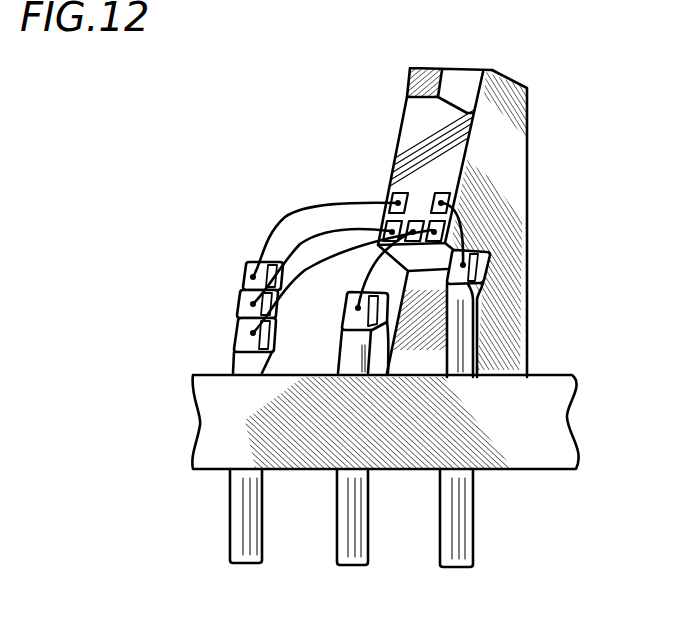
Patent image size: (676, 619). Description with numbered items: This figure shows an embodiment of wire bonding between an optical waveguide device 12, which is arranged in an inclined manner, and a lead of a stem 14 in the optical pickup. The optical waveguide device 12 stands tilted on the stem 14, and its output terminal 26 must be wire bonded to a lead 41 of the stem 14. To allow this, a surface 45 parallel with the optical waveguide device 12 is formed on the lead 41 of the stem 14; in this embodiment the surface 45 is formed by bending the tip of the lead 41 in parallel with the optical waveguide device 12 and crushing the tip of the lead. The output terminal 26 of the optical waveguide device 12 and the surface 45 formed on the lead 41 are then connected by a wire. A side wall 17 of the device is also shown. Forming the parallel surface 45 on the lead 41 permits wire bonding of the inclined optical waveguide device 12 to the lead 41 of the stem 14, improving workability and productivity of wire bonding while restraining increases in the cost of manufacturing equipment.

The optical waveguide device 12 is at (493, 148).
The stem 14 is at (543, 422).
The side wall 17 is at (537, 248).
The output terminal 26 is at (393, 190).
The lead 41 is at (460, 348).
The surface 45 is at (243, 283).